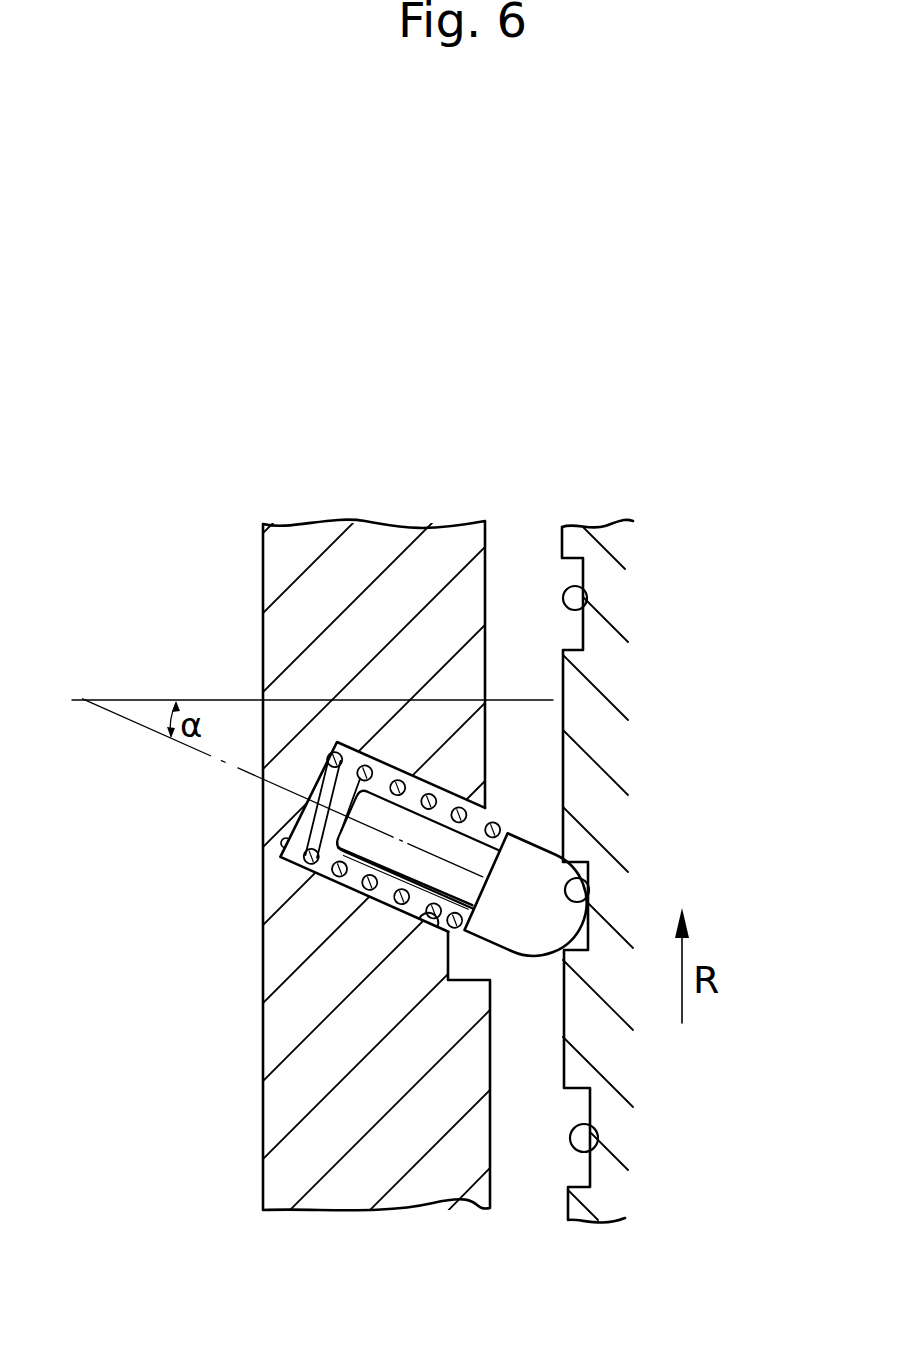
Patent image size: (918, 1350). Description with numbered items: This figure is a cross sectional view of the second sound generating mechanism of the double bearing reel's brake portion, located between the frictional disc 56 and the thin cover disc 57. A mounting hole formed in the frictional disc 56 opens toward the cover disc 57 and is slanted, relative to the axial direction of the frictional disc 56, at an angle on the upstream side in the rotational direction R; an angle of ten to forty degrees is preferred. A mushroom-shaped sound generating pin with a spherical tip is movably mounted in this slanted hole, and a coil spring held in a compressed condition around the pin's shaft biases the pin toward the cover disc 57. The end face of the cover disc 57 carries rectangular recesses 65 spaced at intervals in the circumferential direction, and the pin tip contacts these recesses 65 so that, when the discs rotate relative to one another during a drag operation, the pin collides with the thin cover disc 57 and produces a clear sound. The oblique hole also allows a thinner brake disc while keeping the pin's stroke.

The frictional disc 56 is at (440, 537).
The cover disc 57 is at (587, 537).
The rectangular recesses 65 is at (583, 611).